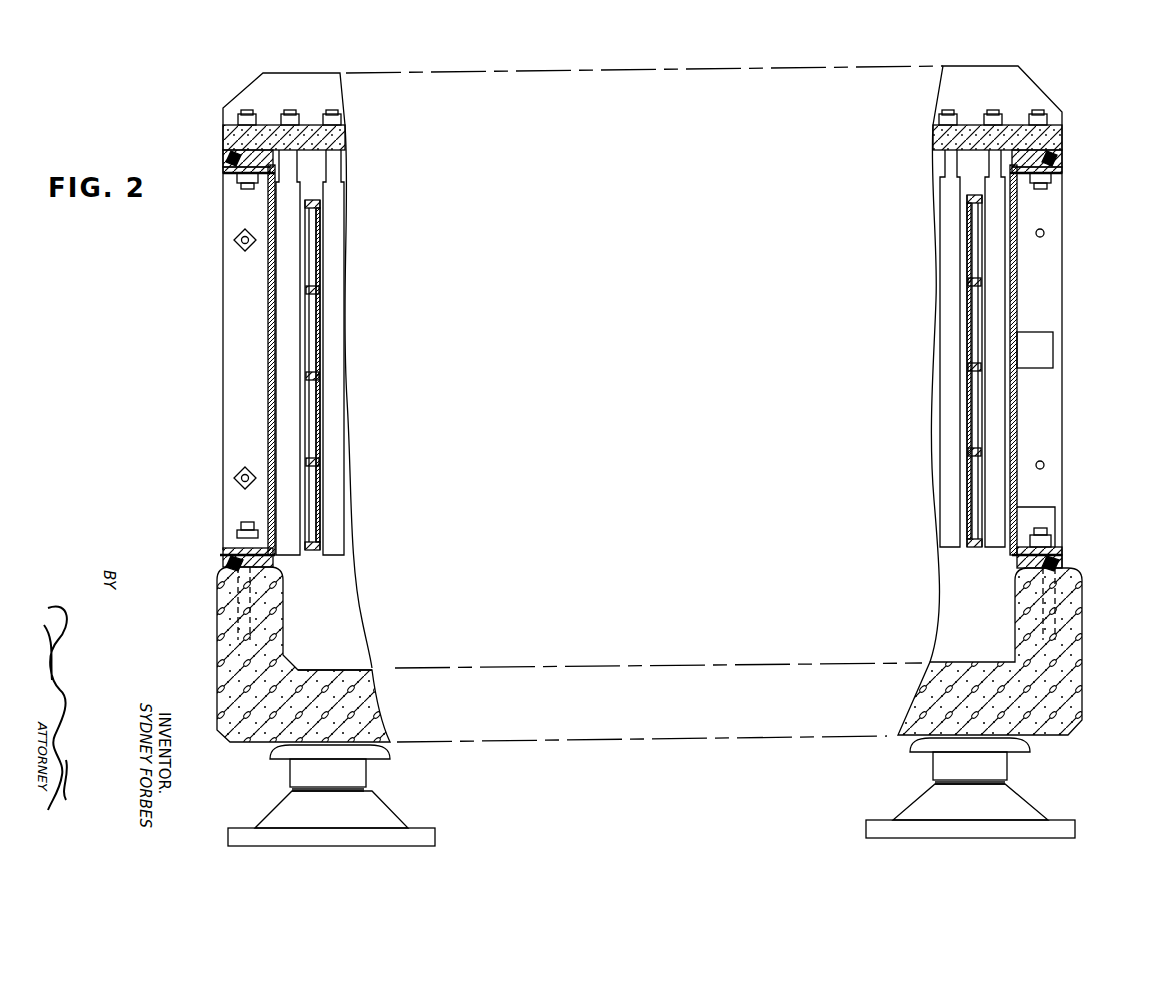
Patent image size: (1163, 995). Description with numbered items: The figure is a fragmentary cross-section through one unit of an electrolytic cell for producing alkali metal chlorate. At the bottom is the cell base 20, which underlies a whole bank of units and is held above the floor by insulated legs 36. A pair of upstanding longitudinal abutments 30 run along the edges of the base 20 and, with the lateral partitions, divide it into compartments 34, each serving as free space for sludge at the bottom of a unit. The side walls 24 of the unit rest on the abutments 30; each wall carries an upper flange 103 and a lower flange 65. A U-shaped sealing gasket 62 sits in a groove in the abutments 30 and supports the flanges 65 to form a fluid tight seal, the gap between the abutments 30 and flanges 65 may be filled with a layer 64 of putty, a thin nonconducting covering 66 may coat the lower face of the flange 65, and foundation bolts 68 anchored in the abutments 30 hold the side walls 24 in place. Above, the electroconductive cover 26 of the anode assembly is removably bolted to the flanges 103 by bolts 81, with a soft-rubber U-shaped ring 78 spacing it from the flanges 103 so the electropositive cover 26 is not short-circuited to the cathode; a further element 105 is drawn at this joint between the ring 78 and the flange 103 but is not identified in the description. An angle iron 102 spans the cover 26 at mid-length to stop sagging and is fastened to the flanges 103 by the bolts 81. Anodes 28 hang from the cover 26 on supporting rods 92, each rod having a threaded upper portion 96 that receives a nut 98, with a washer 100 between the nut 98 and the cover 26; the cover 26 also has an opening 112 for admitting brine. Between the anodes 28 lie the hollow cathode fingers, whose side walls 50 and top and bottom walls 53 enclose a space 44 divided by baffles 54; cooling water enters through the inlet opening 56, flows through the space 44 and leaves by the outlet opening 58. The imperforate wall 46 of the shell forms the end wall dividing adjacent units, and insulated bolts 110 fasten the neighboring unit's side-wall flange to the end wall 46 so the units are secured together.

The cell base 20 is at (238, 744).
The side wall 24 is at (1020, 443).
The cover plate 26 is at (223, 137).
The anode 28 is at (343, 244).
The longitudinal abutment 30 is at (1082, 636).
The compartment 34 is at (335, 640).
The insulated leg 36 is at (1020, 806).
The space 44 is at (313, 330).
The imperforate wall 46 is at (1062, 283).
The side wall of cathode finger 50 is at (318, 532).
The top and bottom walls 53 is at (318, 203).
The baffle 54 is at (312, 460).
The inlet opening 56 is at (1050, 507).
The outlet opening 58 is at (1053, 352).
The sealing gasket 62 is at (228, 563).
The layer of sealing material 64 is at (1067, 564).
The lower flange 65 is at (1063, 550).
The covering 66 is at (1018, 553).
The foundation bolt 68 is at (1045, 535).
The insulating ring 78 is at (1062, 151).
The bolt 81 is at (1040, 110).
The supporting rod 92 is at (344, 165).
The upper portion of rod 96 is at (993, 110).
The nut 98 is at (985, 111).
The washer 100 is at (940, 110).
The angle iron 102 is at (296, 74).
The upper flange 103 is at (1052, 172).
The plate 105 is at (1060, 159).
The bolt 110 is at (240, 476).
The brine opening 112 is at (935, 136).